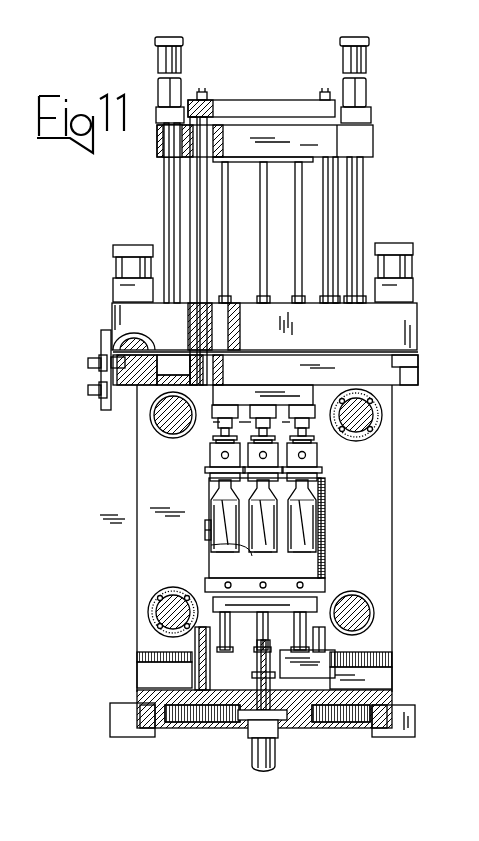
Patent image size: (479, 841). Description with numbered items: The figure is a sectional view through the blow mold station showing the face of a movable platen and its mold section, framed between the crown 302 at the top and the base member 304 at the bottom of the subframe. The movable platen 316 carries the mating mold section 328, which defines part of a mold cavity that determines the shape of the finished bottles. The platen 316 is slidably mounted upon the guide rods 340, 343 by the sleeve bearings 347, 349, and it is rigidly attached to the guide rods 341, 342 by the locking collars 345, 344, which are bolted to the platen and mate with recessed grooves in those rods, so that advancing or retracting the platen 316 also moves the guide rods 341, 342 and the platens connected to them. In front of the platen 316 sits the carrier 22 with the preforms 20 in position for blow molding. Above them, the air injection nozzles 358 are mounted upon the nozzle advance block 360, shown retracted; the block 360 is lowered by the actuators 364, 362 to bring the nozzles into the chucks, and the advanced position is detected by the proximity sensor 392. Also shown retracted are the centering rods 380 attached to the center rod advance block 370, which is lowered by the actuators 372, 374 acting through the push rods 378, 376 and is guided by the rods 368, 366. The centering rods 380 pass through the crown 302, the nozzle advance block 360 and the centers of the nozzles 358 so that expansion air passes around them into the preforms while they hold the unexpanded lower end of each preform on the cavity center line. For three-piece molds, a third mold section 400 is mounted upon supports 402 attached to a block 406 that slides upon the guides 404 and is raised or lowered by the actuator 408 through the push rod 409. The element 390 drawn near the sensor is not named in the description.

The preforms 20 is at (250, 550).
The carrier 22 is at (324, 472).
The crown 302 is at (418, 314).
The base member 304 is at (410, 706).
The movable platen 316 is at (392, 530).
The mating mold section 328 is at (210, 490).
The guide rod 340 is at (152, 422).
The guide rod 341 is at (383, 420).
The guide rod 342 is at (158, 624).
The guide rod 343 is at (367, 597).
The locking collar 344 is at (155, 595).
The locking collar 345 is at (372, 432).
The sleeve bearing 347 is at (165, 437).
The sleeve bearing 349 is at (372, 612).
The air injection nozzles 358 is at (217, 432).
The nozzle advance block 360 is at (410, 385).
The actuator 362 is at (392, 243).
The actuator 364 is at (150, 246).
The guide rod 366 is at (174, 190).
The guide rod 368 is at (348, 200).
The center rod advance block 370 is at (373, 137).
The actuator 372 is at (369, 55).
The actuator 374 is at (183, 56).
The push rod 376 is at (164, 172).
The push rod 378 is at (352, 175).
The centering rods 380 is at (228, 215).
The bracket 390 is at (99, 356).
The proximity sensor 392 is at (99, 397).
The third mold section 400 is at (205, 595).
The supports 402 is at (322, 606).
The guides 404 is at (195, 660).
The block 406 is at (340, 680).
The actuator 408 is at (252, 748).
The push rod 409 is at (286, 682).